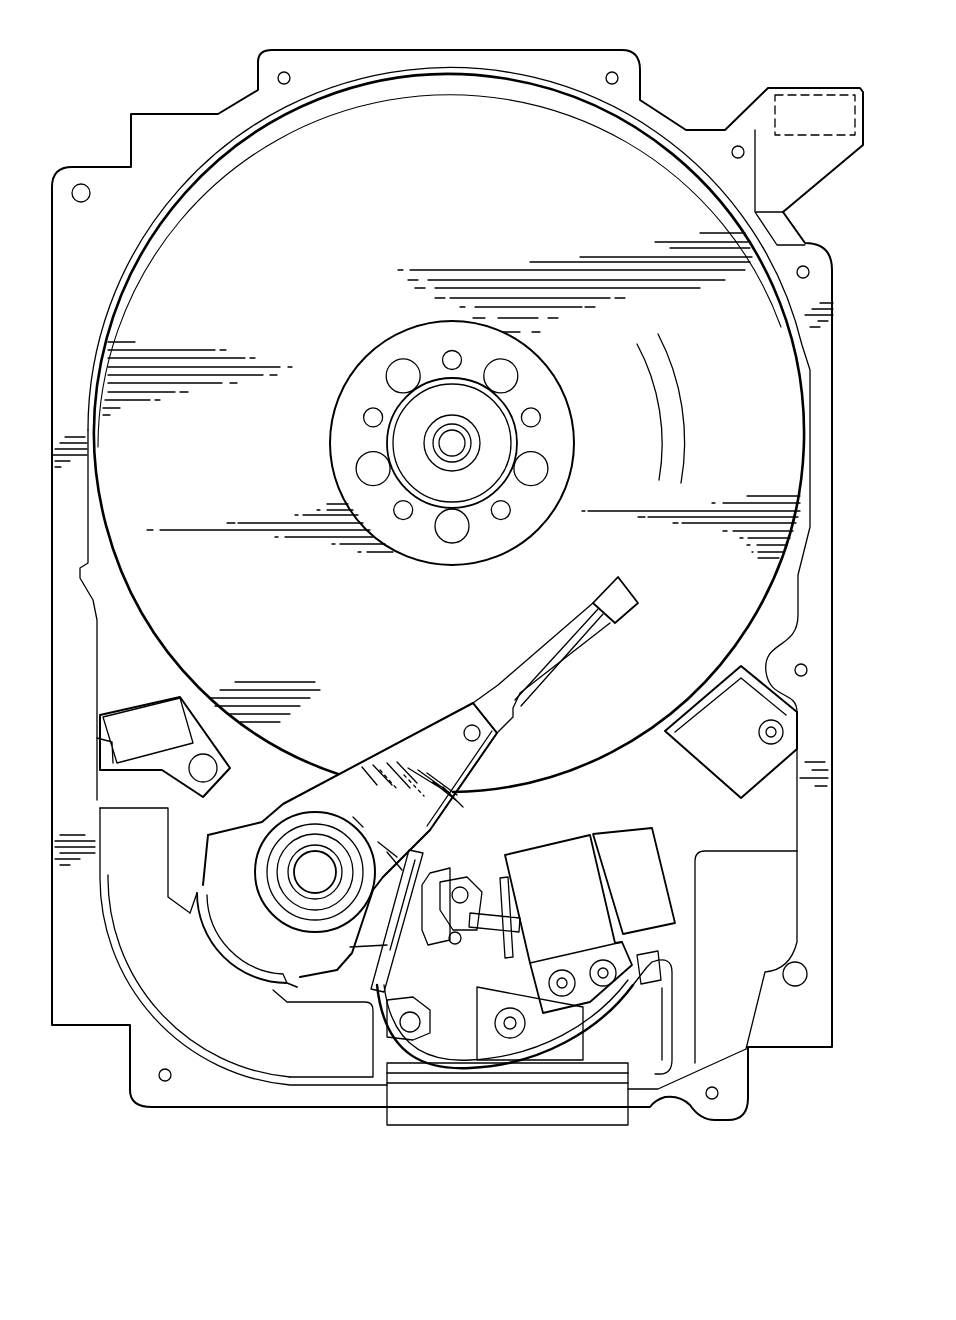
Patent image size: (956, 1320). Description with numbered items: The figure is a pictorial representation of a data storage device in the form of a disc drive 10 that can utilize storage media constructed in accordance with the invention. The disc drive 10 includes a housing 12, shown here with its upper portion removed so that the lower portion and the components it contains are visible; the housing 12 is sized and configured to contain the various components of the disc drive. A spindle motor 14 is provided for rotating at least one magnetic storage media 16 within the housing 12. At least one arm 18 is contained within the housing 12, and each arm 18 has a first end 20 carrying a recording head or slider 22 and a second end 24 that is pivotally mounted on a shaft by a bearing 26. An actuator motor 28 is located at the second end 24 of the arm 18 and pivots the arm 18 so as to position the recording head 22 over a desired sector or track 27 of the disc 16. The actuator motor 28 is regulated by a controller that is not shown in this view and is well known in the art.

The disc drive 10 is at (110, 98).
The housing 12 is at (592, 64).
The spindle motor 14 is at (443, 447).
The magnetic storage media 16 is at (360, 228).
The arm 18 is at (435, 750).
The first end 20 is at (558, 632).
The recording head 22 is at (615, 597).
The second end 24 is at (340, 807).
The bearing 26 is at (303, 862).
The track 27 is at (670, 417).
The actuator motor 28 is at (201, 994).